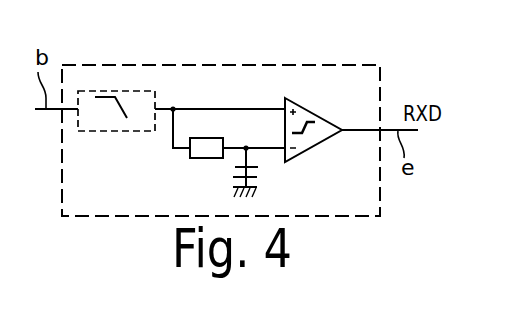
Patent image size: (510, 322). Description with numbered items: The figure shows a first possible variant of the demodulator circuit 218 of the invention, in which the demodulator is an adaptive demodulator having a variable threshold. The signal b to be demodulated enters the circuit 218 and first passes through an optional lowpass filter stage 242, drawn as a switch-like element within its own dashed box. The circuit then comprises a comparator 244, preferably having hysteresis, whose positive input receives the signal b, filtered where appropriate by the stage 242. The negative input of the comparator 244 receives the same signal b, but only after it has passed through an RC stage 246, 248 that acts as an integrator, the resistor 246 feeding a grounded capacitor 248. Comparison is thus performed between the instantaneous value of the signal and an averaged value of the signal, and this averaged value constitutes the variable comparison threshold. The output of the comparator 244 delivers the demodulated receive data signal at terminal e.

The demodulator circuit 218 is at (305, 63).
The lowpass filter stage 242 is at (110, 91).
The comparator 244 is at (310, 110).
The RC stage resistor 246 is at (202, 160).
The RC stage capacitor 248 is at (257, 177).